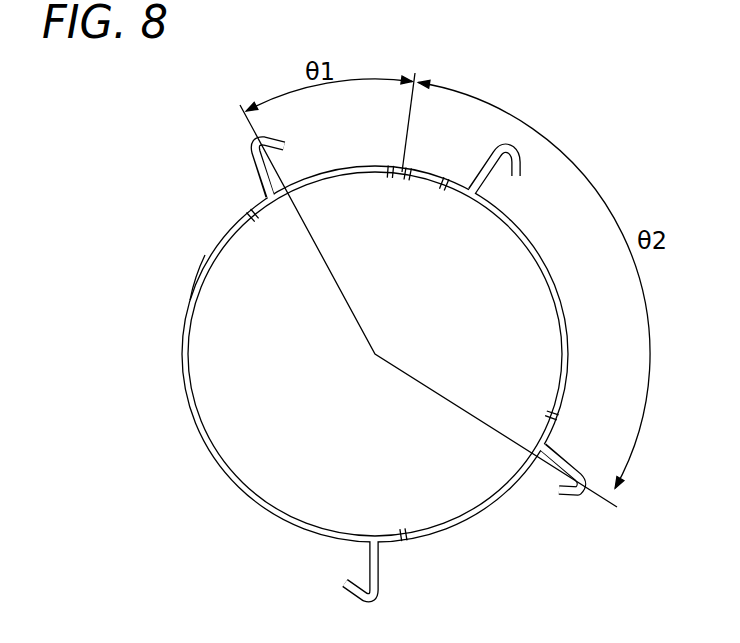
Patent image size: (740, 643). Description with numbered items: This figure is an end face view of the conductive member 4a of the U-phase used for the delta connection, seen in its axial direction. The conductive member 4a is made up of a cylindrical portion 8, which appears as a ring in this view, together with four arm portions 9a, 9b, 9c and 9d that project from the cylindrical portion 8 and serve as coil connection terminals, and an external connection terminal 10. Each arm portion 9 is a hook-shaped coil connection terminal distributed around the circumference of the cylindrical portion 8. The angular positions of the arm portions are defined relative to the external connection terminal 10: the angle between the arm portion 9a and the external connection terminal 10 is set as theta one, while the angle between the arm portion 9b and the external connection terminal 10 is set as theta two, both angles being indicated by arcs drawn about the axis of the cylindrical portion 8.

The conductive member 4a is at (190, 300).
The cylindrical portion 8 is at (250, 487).
The arm portion 9 is at (392, 369).
The arm portion 9a is at (250, 147).
The arm portion 9b is at (582, 500).
The arm portion 9c is at (488, 165).
The arm portion 9d is at (348, 593).
The external connection terminal 10 is at (409, 188).